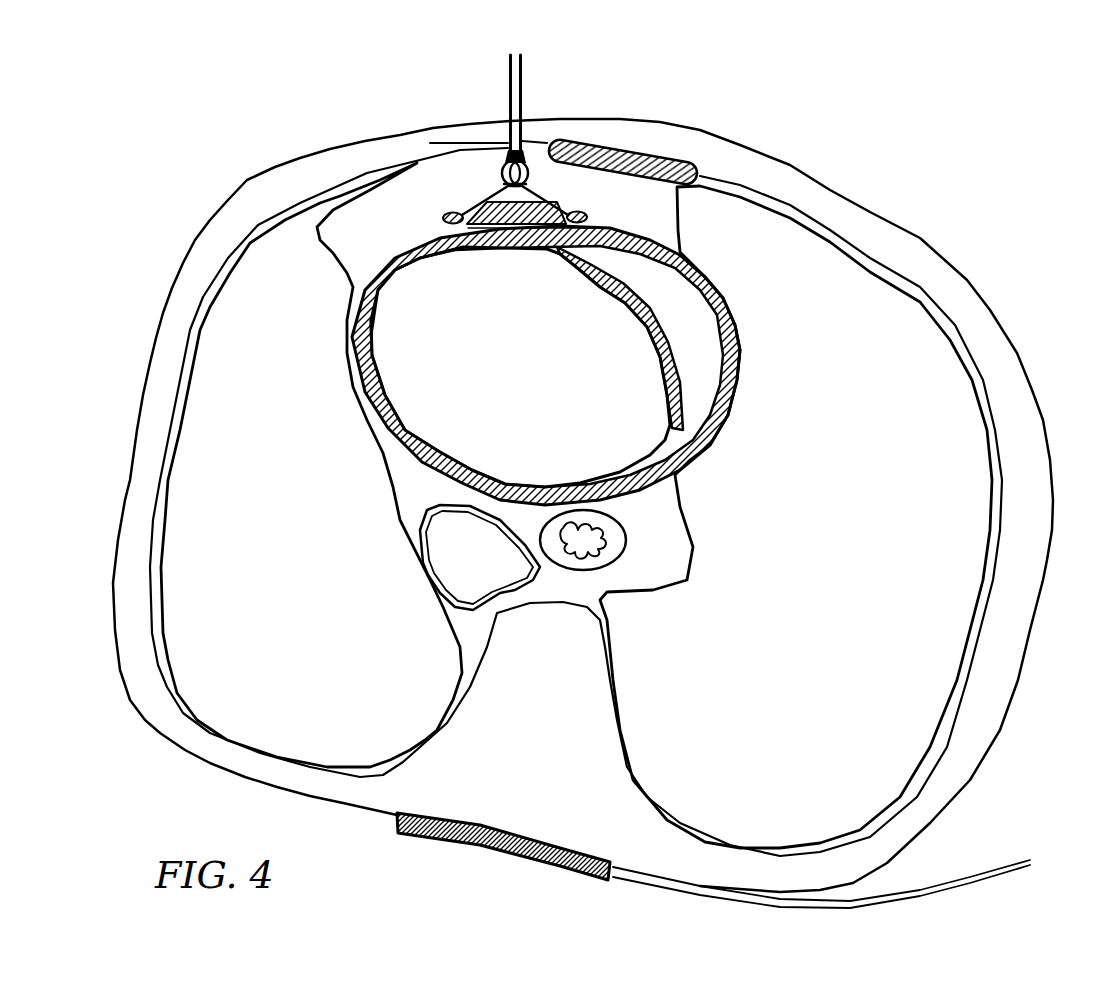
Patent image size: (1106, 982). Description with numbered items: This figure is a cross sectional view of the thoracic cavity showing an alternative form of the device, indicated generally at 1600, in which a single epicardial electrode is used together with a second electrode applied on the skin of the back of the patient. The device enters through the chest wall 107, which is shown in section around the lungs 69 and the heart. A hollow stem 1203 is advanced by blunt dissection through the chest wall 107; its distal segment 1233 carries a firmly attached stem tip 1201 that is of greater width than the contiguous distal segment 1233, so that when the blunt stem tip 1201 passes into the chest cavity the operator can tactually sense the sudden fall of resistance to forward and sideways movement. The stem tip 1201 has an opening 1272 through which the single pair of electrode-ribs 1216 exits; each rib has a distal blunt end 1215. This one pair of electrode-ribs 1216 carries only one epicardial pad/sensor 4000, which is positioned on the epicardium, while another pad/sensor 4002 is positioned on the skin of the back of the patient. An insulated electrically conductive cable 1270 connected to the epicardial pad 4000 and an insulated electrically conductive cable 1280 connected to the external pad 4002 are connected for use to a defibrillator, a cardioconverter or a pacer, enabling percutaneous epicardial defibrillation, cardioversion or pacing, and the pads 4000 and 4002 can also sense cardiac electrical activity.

The chest wall 107 is at (583, 488).
The lung 69 is at (576, 505).
The alternative form of the device 1600 is at (475, 118).
The hollow stem 1203 is at (556, 99).
The distal segment 1233 is at (563, 107).
The opening 1272 is at (436, 140).
The insulated electrically conductive cable 1270 is at (473, 185).
The stem tip 1201 is at (623, 138).
The electrode-ribs 1216 is at (541, 191).
The distal blunt end 1215 is at (622, 204).
The epicardial pad/sensor 4000 is at (552, 242).
The external pad/sensor 4002 is at (503, 850).
The insulated electrically conductive cable 1280 is at (840, 857).